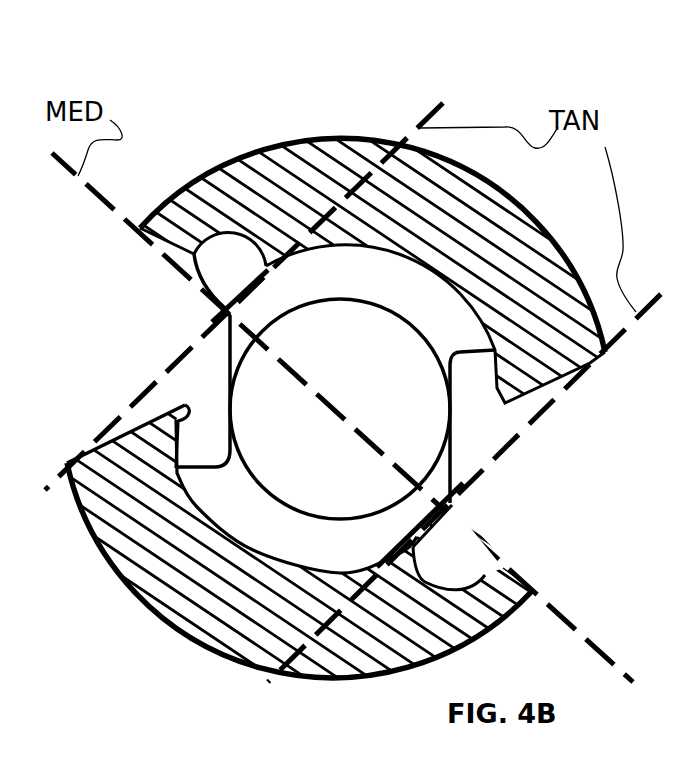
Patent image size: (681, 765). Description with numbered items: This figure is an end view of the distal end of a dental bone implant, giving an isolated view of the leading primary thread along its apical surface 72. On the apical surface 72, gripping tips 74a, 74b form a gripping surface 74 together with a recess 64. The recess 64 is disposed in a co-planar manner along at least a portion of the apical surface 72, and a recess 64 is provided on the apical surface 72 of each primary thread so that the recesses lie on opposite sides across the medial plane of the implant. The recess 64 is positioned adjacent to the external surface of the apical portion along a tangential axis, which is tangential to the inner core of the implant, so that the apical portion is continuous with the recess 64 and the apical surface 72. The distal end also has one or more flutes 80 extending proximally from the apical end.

The recess 64 is at (247, 250).
The apical surface 72 is at (295, 242).
The gripping surface 74 is at (187, 247).
The gripping tip 74a is at (143, 236).
The gripping tip 74b is at (187, 249).
The flute 80 is at (158, 337).